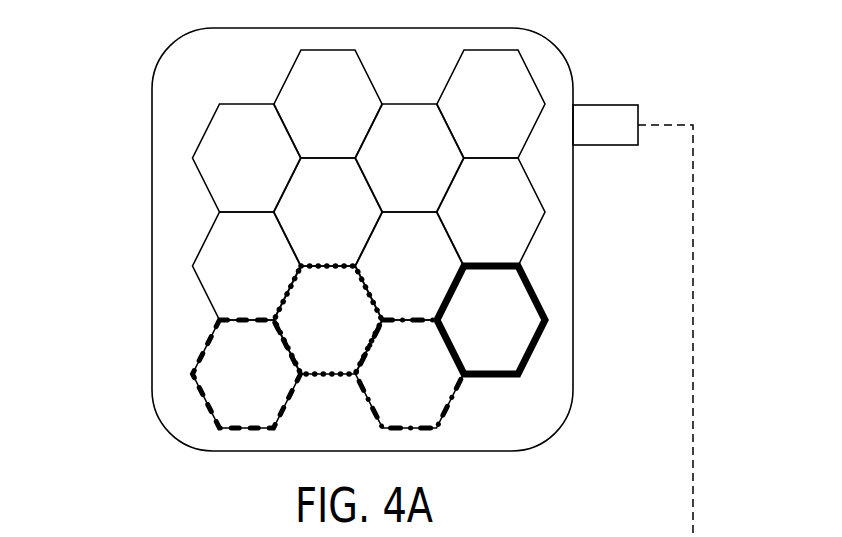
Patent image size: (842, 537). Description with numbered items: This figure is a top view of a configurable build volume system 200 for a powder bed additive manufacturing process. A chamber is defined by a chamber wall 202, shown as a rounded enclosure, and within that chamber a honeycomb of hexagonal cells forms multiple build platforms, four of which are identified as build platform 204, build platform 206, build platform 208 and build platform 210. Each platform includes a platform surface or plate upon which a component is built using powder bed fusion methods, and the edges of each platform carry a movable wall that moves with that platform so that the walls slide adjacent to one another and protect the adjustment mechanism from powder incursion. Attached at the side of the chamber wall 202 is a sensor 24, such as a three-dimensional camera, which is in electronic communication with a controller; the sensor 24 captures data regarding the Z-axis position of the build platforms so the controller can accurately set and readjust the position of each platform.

The configurable build volume system 200 is at (631, 69).
The chamber wall 202 is at (152, 140).
The build platform 204 is at (224, 377).
The build platform 206 is at (297, 341).
The build platform 208 is at (430, 407).
The build platform 210 is at (518, 315).
The sensor 24 is at (640, 116).